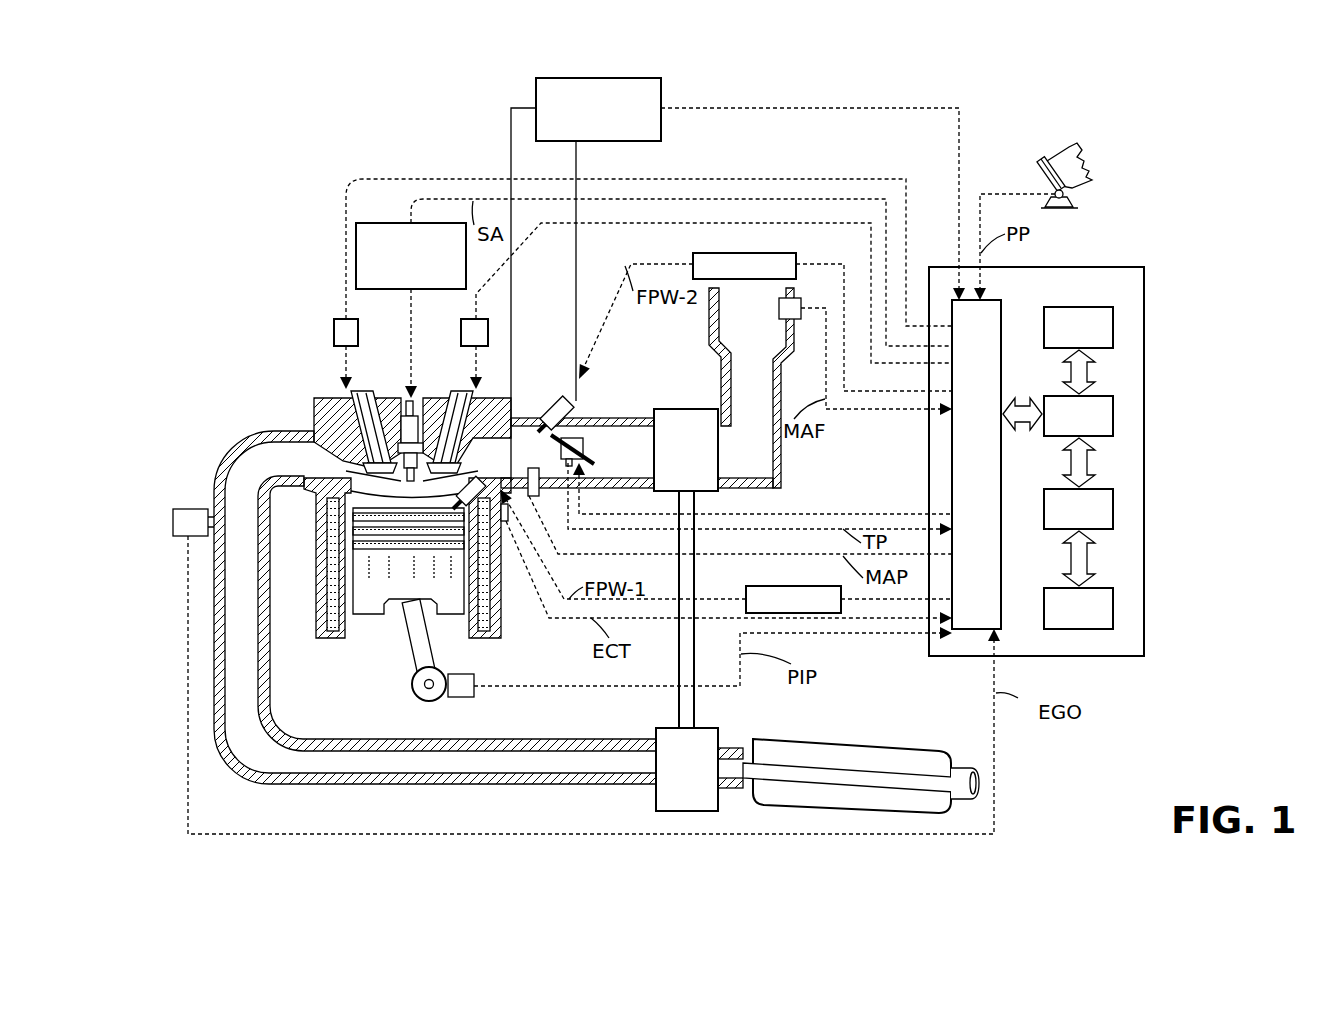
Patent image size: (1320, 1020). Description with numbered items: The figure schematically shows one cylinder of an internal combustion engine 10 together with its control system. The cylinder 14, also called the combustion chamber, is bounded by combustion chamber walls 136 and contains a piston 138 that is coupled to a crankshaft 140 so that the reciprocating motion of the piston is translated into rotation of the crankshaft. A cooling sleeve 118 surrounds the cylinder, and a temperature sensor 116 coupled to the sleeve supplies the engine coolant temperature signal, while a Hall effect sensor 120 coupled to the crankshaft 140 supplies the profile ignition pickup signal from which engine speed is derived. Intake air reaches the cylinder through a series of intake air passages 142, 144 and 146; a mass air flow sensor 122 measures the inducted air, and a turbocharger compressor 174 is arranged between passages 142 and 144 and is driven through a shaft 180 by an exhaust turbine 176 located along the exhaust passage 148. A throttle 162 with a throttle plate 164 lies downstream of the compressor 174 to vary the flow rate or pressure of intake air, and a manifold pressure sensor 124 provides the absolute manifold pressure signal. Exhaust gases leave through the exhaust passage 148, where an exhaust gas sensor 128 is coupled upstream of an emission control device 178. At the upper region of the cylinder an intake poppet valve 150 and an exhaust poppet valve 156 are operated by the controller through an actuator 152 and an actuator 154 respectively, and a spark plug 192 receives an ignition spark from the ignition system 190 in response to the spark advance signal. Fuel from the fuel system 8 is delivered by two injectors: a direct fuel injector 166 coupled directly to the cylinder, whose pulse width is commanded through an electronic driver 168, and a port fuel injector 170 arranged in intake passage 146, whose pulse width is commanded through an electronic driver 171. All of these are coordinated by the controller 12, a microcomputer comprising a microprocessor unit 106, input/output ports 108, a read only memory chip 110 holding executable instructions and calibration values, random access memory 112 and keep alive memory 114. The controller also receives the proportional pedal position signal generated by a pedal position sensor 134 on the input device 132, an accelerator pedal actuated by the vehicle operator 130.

The fuel system 8 is at (630, 77).
The internal combustion engine 10 is at (246, 352).
The controller 12 is at (1143, 266).
The cylinder 14 is at (407, 492).
The microprocessor unit 106 is at (1113, 410).
The input/output ports 108 is at (1002, 305).
The read only memory chip 110 is at (1113, 320).
The random access memory 112 is at (1113, 508).
The keep alive memory 114 is at (1113, 603).
The temperature sensor 116 is at (508, 525).
The cooling sleeve 118 is at (500, 623).
The Hall effect sensor 120 is at (462, 698).
The mass air flow sensor 122 is at (796, 300).
The manifold pressure sensor 124 is at (545, 527).
The exhaust gas sensor 128 is at (162, 508).
The vehicle operator 130 is at (1090, 157).
The input device 132 is at (1037, 172).
The pedal position sensor 134 is at (1073, 193).
The combustion chamber walls 136 is at (355, 632).
The piston 138 is at (393, 590).
The crankshaft 140 is at (418, 700).
The intake air passage 142 is at (768, 337).
The intake air passage 144 is at (640, 459).
The intake air passage 146 is at (547, 459).
The exhaust passage 148 is at (307, 471).
The intake poppet valve 150 is at (452, 432).
The actuator 152 is at (460, 337).
The actuator 154 is at (330, 337).
The exhaust poppet valve 156 is at (330, 442).
The throttle 162 is at (572, 435).
The throttle plate 164 is at (552, 433).
The fuel injector 166 is at (494, 308).
The electronic driver 168 is at (748, 582).
The fuel injector 170 is at (558, 400).
The electronic driver 171 is at (698, 252).
The compressor 174 is at (668, 407).
The exhaust turbine 176 is at (652, 800).
The emission control device 178 is at (908, 745).
The shaft 180 is at (690, 692).
The ignition system 190 is at (366, 222).
The spark plug 192 is at (400, 420).